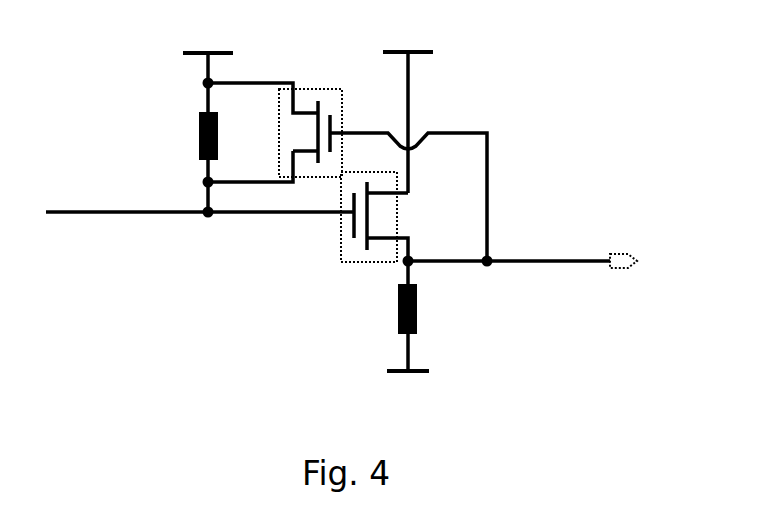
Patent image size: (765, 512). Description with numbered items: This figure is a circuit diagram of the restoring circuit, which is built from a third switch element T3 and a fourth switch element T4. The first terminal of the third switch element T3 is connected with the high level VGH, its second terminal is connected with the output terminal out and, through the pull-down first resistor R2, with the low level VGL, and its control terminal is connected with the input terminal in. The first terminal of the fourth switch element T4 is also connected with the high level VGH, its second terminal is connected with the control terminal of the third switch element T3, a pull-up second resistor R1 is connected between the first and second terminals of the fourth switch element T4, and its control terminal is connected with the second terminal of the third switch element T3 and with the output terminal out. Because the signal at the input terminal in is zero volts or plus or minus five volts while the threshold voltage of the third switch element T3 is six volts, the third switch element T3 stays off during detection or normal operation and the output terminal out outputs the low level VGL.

The third switch element T3 is at (362, 236).
The fourth switch element T4 is at (347, 165).
The second resistor R1 is at (185, 145).
The first resistor R2 is at (434, 316).
The high level VGH is at (316, 107).
The low level VGL is at (415, 391).
The input terminal in is at (200, 204).
The output terminal out is at (536, 251).